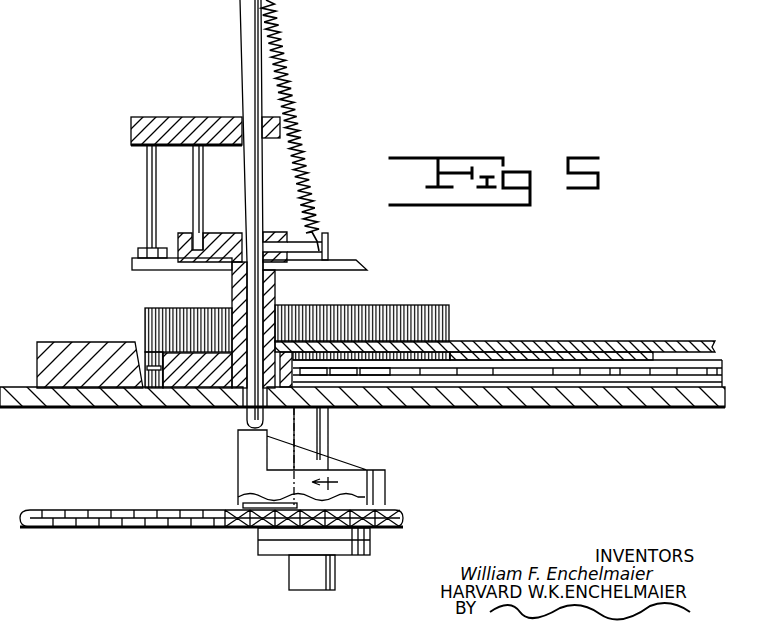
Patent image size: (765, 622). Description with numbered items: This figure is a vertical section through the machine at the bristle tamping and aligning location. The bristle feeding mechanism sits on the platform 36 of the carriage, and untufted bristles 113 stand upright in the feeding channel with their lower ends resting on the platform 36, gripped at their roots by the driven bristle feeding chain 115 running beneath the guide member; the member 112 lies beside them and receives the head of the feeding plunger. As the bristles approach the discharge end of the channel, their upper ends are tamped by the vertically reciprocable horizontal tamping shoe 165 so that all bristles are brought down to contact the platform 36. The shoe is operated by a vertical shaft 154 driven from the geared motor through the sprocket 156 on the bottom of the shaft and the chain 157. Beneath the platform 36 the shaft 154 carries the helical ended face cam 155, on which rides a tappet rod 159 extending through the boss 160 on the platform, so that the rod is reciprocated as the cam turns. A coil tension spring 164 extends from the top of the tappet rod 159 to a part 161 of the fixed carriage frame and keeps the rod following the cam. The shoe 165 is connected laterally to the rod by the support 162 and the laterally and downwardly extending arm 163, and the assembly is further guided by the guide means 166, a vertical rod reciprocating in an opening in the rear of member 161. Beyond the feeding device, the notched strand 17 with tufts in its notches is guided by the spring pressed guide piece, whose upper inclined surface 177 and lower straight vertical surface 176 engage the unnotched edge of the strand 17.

The notched strand 17 is at (146, 355).
The platform 36 is at (474, 398).
The member 112 is at (535, 325).
The bristles 113 is at (392, 322).
The bristle feeding chain 115 is at (633, 373).
The vertical shaft 154 is at (333, 590).
The helical ended face cam 155 is at (240, 482).
The sprocket 156 is at (403, 516).
The chain 157 is at (80, 509).
The tappet rod 159 is at (276, 290).
The boss 160 is at (277, 303).
The fixed frame part 161 is at (218, 233).
The support 162 is at (193, 122).
The arm 163 is at (147, 196).
The coil tension spring 164 is at (306, 158).
The tamping shoe 165 is at (173, 272).
The guide means 166 is at (182, 223).
The lower straight vertical surface 176 is at (147, 370).
The upper inclined surface 177 is at (137, 340).